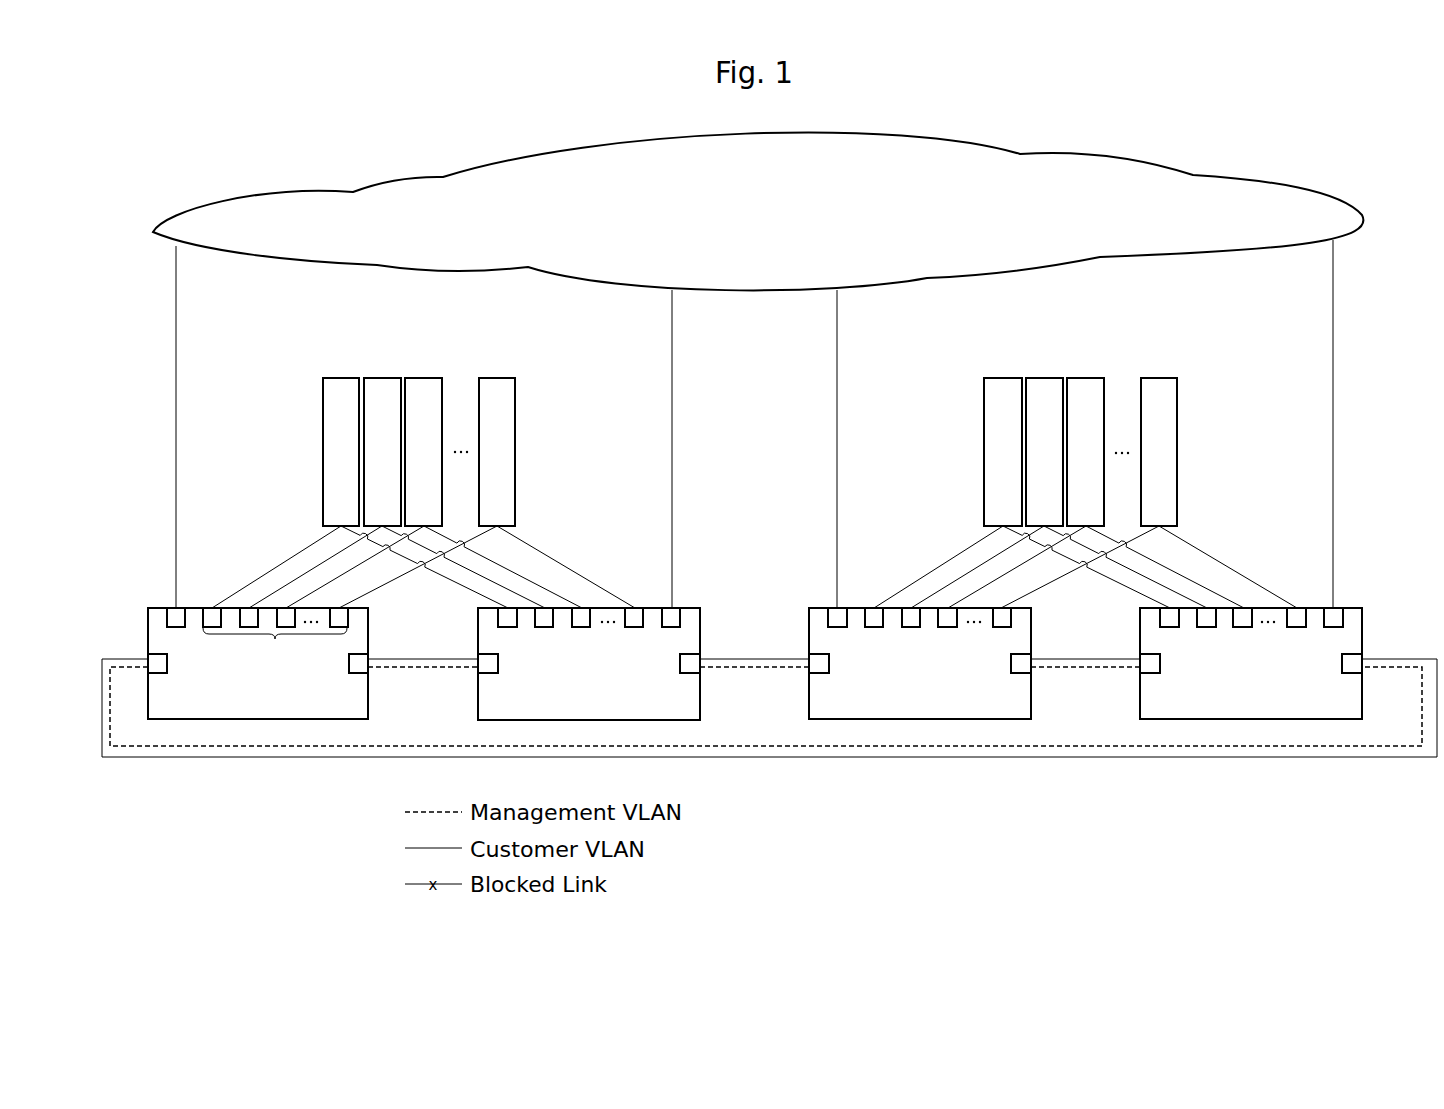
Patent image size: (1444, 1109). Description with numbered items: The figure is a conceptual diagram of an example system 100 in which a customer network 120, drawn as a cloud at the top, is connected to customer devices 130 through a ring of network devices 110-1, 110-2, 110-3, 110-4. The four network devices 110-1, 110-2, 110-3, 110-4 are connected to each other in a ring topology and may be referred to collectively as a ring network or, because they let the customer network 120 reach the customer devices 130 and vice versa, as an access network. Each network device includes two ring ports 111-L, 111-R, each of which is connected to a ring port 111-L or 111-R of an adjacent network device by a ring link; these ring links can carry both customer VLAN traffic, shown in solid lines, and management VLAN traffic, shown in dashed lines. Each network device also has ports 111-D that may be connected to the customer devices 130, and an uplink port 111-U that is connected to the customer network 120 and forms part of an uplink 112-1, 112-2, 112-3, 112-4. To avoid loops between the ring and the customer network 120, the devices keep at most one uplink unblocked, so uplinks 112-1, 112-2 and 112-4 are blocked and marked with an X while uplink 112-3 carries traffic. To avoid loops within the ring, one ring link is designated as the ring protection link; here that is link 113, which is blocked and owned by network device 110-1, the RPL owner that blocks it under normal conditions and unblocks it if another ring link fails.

The system 100 is at (205, 138).
The customer network 120 is at (356, 191).
The uplink 112-1 is at (176, 370).
The uplink 112-2 is at (672, 370).
The uplink 112-3 is at (837, 364).
The uplink 112-4 is at (1333, 340).
The customer devices 130 is at (322, 403).
The network device 110-1 is at (216, 644).
The network device 110-2 is at (699, 607).
The network device 110-3 is at (809, 627).
The network device 110-4 is at (1378, 588).
The uplink port 111-U is at (170, 609).
The ports 111-D is at (275, 649).
The ring port 111-L is at (168, 673).
The ring port 111-R is at (352, 673).
The link 113 is at (400, 656).